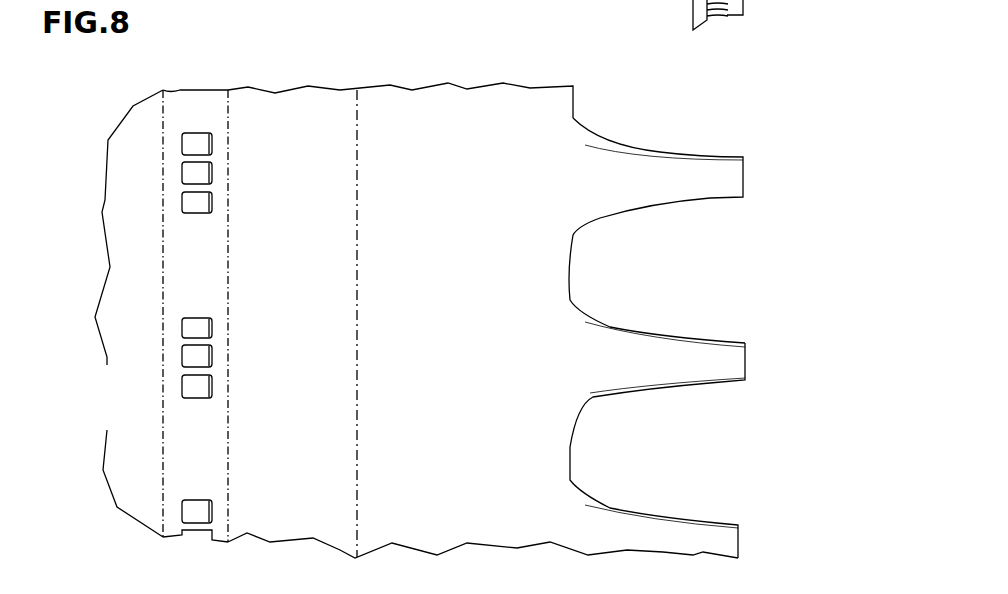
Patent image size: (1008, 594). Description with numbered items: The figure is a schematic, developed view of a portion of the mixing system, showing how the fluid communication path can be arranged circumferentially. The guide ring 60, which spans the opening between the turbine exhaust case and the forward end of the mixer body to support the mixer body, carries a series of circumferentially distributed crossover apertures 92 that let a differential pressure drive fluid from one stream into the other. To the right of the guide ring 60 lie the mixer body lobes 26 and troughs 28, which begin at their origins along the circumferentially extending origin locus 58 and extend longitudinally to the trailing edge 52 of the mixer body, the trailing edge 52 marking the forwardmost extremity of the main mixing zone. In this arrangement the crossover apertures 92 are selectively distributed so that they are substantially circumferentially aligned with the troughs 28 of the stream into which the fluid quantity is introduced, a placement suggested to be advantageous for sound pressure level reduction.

The lobe 26 is at (555, 251).
The trough 28 is at (605, 175).
The trailing edge 52 is at (722, 197).
The origin locus 58 is at (357, 123).
The guide ring 60 is at (175, 103).
The crossover apertures 92 is at (200, 177).